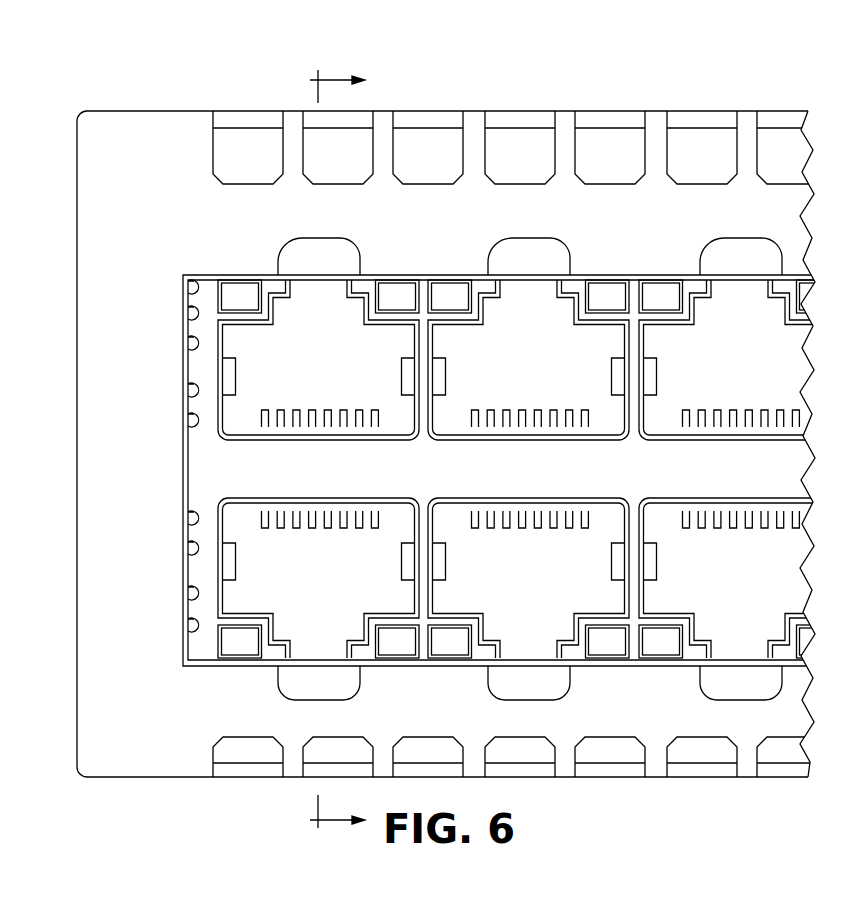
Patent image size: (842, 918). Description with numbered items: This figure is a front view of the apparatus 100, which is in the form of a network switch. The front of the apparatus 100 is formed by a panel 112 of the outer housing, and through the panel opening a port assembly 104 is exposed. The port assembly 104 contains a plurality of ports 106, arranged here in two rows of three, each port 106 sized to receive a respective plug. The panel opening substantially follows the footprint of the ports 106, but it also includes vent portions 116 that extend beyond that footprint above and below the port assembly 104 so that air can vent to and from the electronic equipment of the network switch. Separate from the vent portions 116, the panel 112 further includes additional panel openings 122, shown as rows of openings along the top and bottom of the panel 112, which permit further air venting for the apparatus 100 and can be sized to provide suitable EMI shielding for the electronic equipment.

The apparatus 100 is at (241, 88).
The port assembly 104 is at (187, 265).
The port 106 is at (303, 369).
The panel 112 is at (155, 110).
The vent portion 116 is at (289, 255).
The additional panel opening 122 is at (395, 140).